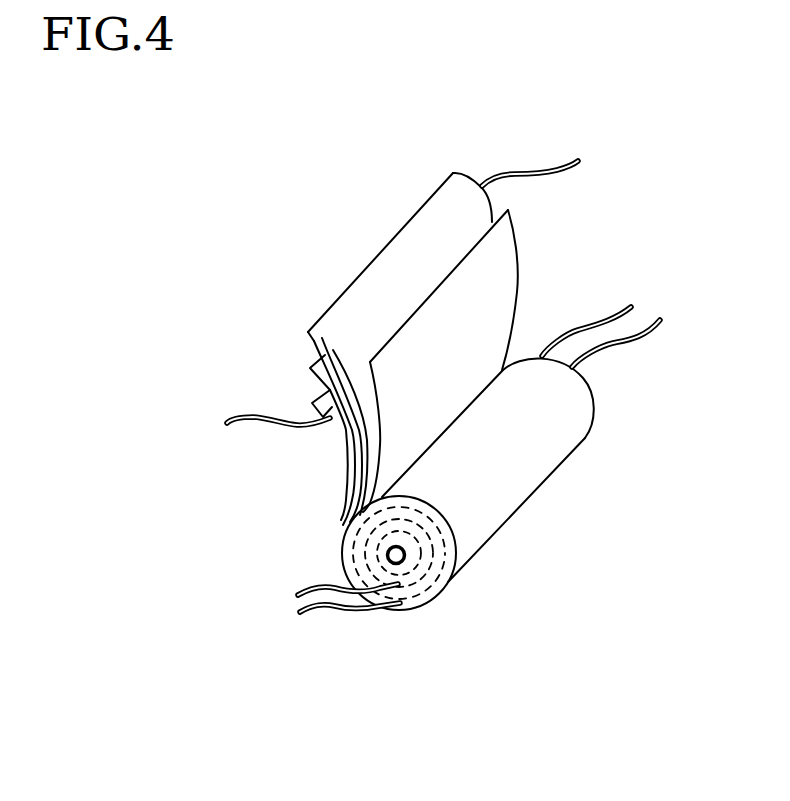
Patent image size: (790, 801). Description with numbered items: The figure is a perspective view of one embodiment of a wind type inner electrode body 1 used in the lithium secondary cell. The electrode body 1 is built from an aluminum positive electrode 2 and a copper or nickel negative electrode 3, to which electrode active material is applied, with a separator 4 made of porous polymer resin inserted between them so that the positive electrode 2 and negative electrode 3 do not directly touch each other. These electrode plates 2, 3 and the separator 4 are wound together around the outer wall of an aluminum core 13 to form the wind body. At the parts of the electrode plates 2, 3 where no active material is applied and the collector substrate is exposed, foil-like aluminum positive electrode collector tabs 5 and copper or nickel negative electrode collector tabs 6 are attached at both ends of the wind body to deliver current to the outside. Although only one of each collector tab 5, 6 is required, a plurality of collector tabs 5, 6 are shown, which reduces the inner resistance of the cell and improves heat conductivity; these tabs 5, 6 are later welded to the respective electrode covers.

The wind type inner electrode body 1 is at (545, 497).
The positive electrode 2 is at (346, 452).
The negative electrode 3 is at (388, 267).
The separator 4 is at (502, 303).
The positive electrode collector tab 5 is at (243, 412).
The negative electrode collector tab 6 is at (530, 176).
The core 13 is at (405, 563).